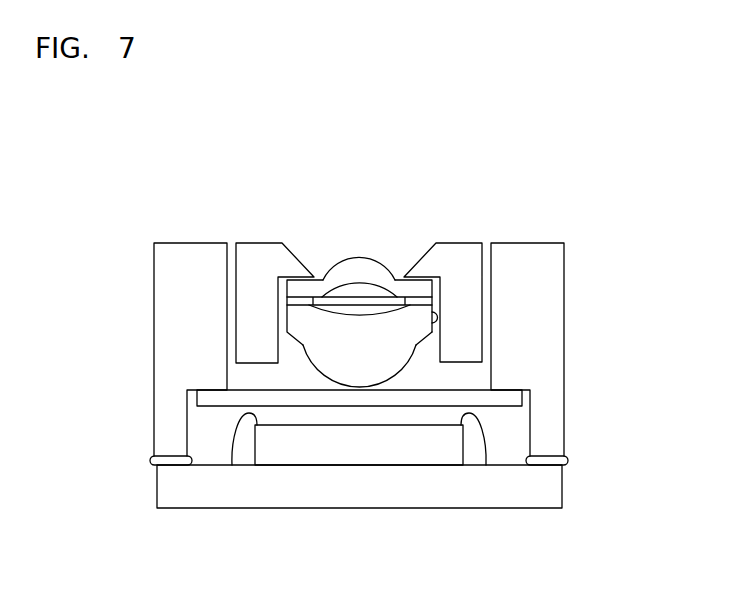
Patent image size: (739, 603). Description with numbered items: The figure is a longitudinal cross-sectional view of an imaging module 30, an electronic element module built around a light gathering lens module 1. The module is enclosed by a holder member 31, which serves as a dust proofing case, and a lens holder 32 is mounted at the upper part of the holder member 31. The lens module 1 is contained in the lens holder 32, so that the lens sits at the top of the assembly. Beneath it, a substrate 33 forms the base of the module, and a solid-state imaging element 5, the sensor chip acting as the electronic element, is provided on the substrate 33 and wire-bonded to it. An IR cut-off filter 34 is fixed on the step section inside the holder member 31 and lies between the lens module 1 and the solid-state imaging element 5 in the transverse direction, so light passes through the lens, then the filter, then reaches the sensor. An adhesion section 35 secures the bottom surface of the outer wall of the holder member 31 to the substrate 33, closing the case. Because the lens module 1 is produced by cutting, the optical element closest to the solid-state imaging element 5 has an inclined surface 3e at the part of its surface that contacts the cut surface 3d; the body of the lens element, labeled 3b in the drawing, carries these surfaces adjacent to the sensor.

The imaging module 30 is at (418, 162).
The lens module 1 is at (362, 242).
The holder member 31 is at (185, 253).
The lens holder 32 is at (465, 253).
The spherical lens body 3b is at (320, 371).
The cut surface 3d is at (430, 327).
The inclined surface 3e is at (431, 338).
The IR cut-off filter 34 is at (198, 395).
The adhesion section 35 is at (150, 461).
The solid-state imaging element 5 is at (283, 455).
The substrate 33 is at (398, 490).